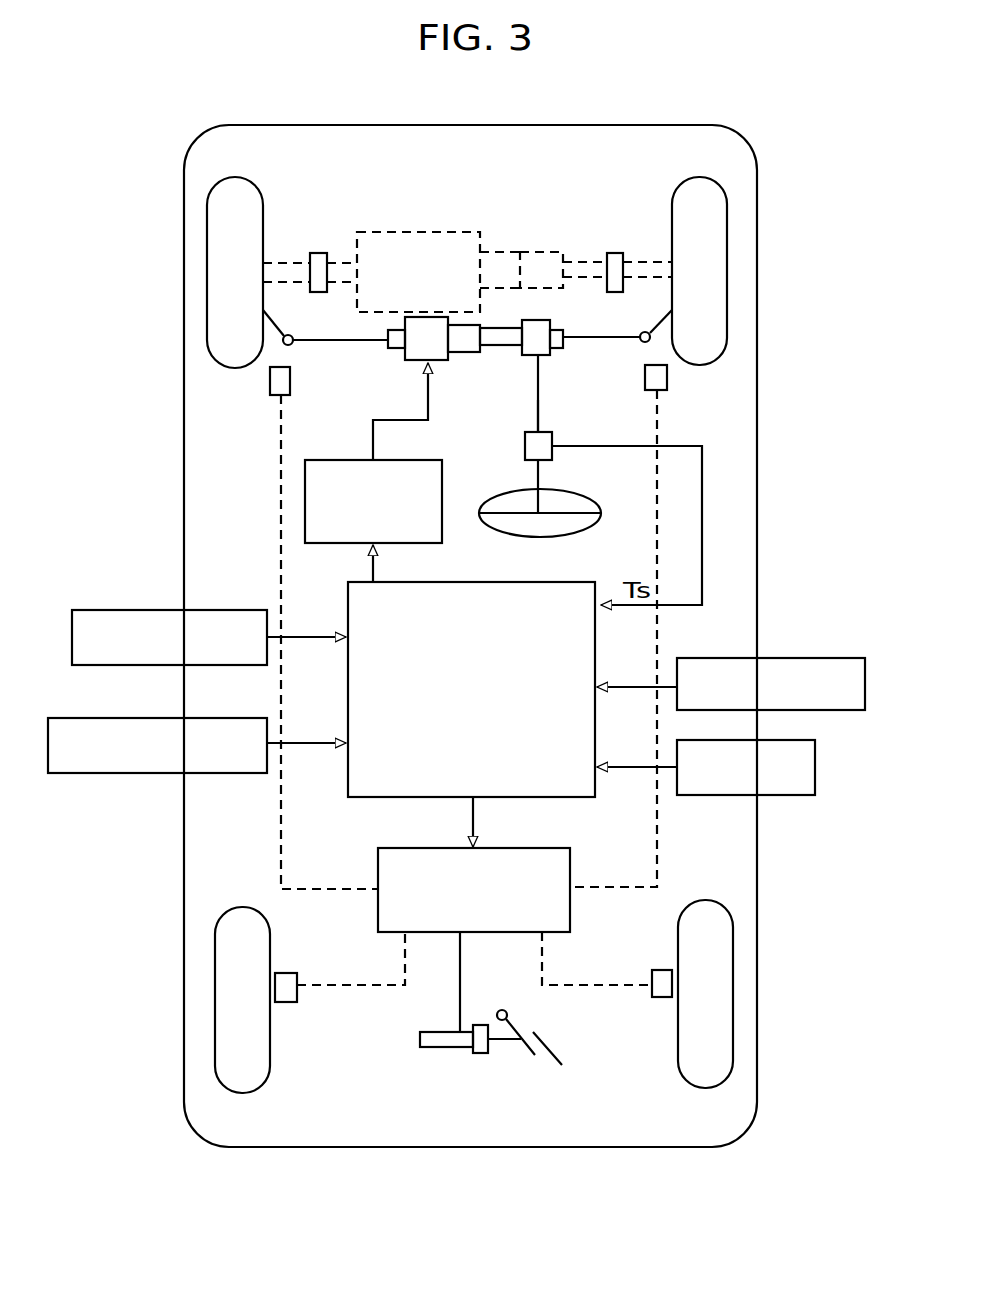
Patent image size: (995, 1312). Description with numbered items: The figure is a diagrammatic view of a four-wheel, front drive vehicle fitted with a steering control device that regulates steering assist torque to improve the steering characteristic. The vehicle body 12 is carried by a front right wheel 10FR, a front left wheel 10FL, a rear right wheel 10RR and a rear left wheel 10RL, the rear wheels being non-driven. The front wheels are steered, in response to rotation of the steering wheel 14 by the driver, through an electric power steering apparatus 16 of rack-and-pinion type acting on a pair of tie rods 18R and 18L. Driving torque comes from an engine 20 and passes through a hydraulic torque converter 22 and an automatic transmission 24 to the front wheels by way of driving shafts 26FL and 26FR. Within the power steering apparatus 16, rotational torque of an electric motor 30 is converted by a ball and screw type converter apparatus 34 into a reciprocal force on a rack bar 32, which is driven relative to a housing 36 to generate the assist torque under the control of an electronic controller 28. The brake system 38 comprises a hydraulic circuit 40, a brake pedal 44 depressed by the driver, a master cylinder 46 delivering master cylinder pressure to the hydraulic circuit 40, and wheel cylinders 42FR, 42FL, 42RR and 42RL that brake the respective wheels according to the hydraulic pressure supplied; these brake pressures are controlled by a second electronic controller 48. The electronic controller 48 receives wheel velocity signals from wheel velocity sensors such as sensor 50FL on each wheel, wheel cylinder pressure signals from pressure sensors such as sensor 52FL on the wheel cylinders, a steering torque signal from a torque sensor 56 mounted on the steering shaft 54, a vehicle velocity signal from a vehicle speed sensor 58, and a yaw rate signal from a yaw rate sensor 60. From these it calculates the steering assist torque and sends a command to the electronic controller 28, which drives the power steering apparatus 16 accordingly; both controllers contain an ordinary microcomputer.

The front left wheel 10FL is at (207, 285).
The front right wheel 10FR is at (727, 283).
The rear left wheel 10RL is at (215, 1006).
The rear right wheel 10RR is at (733, 1007).
The vehicle body 12 is at (757, 525).
The steering wheel 14 is at (578, 490).
The electric power steering apparatus 16 is at (556, 375).
The tie rod 18L is at (278, 331).
The tie rod 18R is at (657, 323).
The engine 20 is at (421, 232).
The hydraulic torque converter 22 is at (502, 252).
The automatic transmission 24 is at (543, 252).
The driving shaft 26FL is at (285, 253).
The driving shaft 26FR is at (639, 253).
The electronic controller 28 is at (373, 453).
The electric motor 30 is at (418, 362).
The rack bar 32 is at (348, 345).
The converter apparatus 34 is at (469, 356).
The housing 36 is at (493, 330).
The brake system 38 is at (398, 1030).
The hydraulic circuit 40 is at (474, 890).
The wheel cylinder 42FL is at (272, 378).
The wheel cylinder 42FR is at (667, 378).
The wheel cylinder 42RL is at (286, 972).
The wheel cylinder 42RR is at (660, 968).
The brake pedal 44 is at (560, 1057).
The master cylinder 46 is at (437, 1048).
The electronic controller 48 is at (471, 696).
The wheel velocity sensor 50FL is at (215, 610).
The pressure sensor 52FL is at (215, 775).
The steering shaft 54 is at (538, 414).
The torque sensor 56 is at (525, 445).
The vehicle speed sensor 58 is at (737, 658).
The yaw rate sensor 60 is at (725, 797).